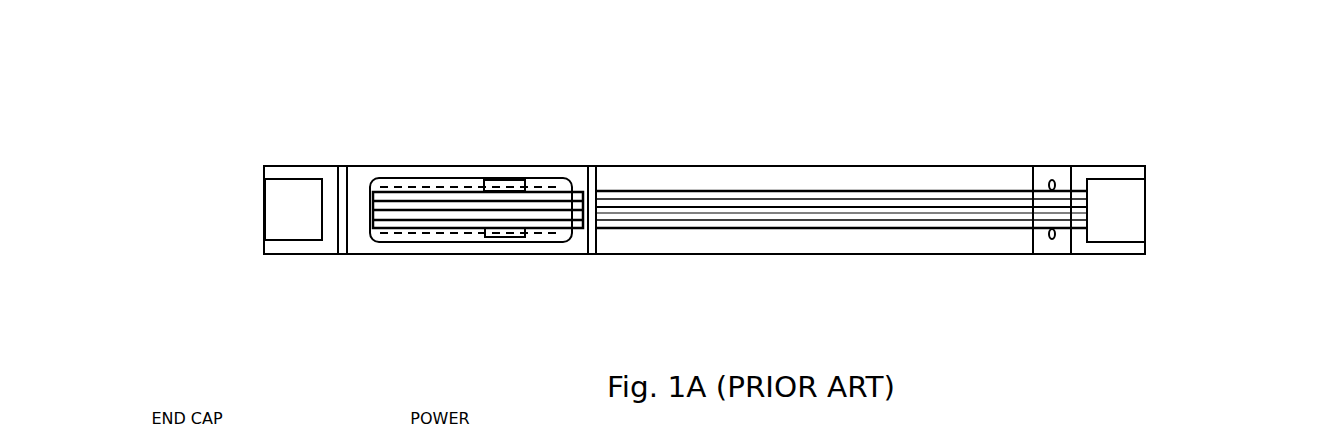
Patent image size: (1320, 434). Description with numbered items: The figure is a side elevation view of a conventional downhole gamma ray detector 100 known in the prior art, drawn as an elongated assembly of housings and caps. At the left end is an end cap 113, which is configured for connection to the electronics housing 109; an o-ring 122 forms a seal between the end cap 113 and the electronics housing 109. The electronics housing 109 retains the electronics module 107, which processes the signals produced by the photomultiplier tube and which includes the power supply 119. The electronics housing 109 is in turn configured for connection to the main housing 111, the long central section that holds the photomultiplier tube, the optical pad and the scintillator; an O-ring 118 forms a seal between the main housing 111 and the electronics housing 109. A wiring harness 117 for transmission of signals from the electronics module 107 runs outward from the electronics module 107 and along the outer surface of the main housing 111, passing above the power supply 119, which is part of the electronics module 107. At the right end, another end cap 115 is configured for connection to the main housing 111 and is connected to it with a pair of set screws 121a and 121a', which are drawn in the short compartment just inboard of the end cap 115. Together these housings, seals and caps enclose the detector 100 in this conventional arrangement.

The downhole gamma ray detector 100 is at (1170, 117).
The electronics module 107 is at (458, 191).
The electronics housing 109 is at (483, 250).
The main housing 111 is at (848, 242).
The end cap 113 is at (310, 250).
The end cap 115 is at (1108, 247).
The wiring harness 117 is at (947, 197).
The O-ring 118 is at (592, 166).
The power supply 119 is at (508, 237).
The set screw 121a is at (1156, 176).
The set screw 121a' is at (1006, 294).
The o-ring 122 is at (342, 166).